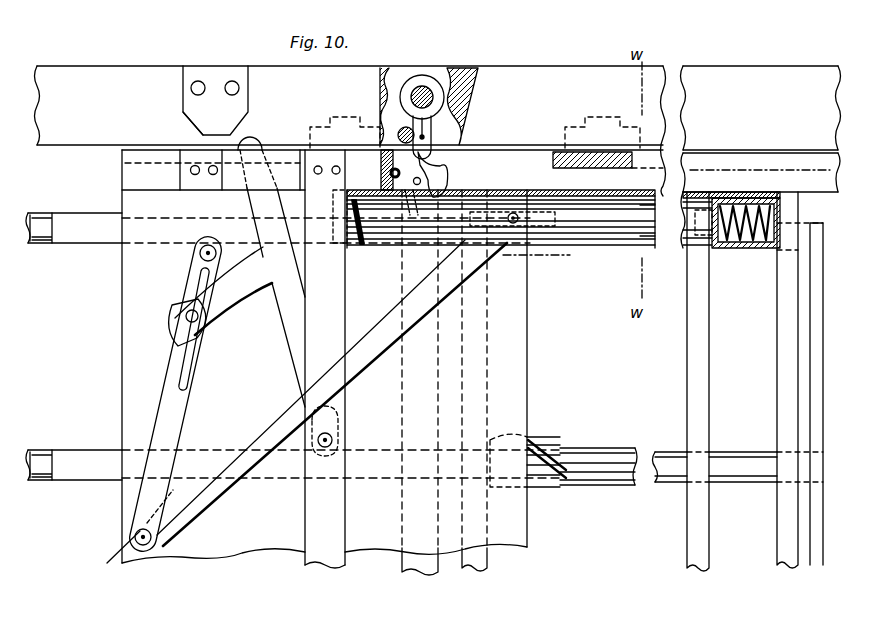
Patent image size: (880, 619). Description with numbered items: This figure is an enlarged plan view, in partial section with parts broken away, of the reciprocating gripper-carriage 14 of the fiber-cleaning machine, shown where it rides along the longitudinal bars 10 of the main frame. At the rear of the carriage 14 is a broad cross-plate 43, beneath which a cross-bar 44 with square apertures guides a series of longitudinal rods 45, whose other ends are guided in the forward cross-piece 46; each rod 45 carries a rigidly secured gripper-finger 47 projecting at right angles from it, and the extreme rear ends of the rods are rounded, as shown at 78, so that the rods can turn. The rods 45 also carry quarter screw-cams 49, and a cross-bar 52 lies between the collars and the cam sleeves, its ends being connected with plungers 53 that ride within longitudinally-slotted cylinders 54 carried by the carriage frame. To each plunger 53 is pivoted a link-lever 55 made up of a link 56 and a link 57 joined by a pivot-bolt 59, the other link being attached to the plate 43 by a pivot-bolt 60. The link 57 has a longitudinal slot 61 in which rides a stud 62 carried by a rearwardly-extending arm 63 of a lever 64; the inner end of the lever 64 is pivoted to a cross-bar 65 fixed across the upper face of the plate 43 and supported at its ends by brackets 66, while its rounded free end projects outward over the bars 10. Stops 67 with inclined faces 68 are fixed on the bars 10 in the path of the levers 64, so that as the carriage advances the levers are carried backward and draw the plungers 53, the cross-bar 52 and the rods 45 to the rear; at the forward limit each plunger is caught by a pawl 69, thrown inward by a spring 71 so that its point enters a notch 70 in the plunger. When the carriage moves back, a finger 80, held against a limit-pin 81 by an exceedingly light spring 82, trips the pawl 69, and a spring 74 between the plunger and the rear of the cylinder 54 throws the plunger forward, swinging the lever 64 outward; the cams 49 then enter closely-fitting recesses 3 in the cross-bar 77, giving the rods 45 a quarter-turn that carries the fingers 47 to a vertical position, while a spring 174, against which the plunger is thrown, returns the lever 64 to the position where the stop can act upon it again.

The recesses 3 is at (700, 452).
The longitudinal bars 10 is at (761, 129).
The reciprocating gripper-carriage 14 is at (323, 373).
The cross-plate 43 is at (135, 356).
The cross-bar 44 is at (421, 570).
The longitudinal rods 45 is at (610, 442).
The forward cross-piece 46 is at (778, 380).
The gripper-finger 47 is at (815, 582).
The quarter screw-cams 49 is at (528, 440).
The cross-bar 52 is at (480, 564).
The plungers 53 is at (546, 205).
The longitudinally-slotted cylinders 54 is at (610, 242).
The link-lever 55 is at (152, 540).
The link 56 is at (327, 393).
The link 57 is at (176, 394).
The pivot-bolt 59 is at (108, 554).
The pivot-bolt 60 is at (210, 253).
The longitudinal slot 61 is at (192, 370).
The stud 62 is at (197, 313).
The rearwardly-extending arm 63 is at (264, 293).
The lever 64 is at (276, 242).
The cross-bar 65 is at (360, 396).
The brackets 66 is at (265, 163).
The stops 67 is at (215, 100).
The inclined faces 68 is at (190, 125).
The pawls 69 is at (425, 183).
The notch 70 is at (432, 218).
The spring 71 is at (392, 168).
The spring 74 is at (362, 245).
The cross-bar 77 is at (694, 381).
The rounded rear ends 78 is at (42, 227).
The fingers 80 is at (432, 146).
The limit-pins 81 is at (400, 132).
The springs 82 is at (441, 104).
The spring 174 is at (745, 246).